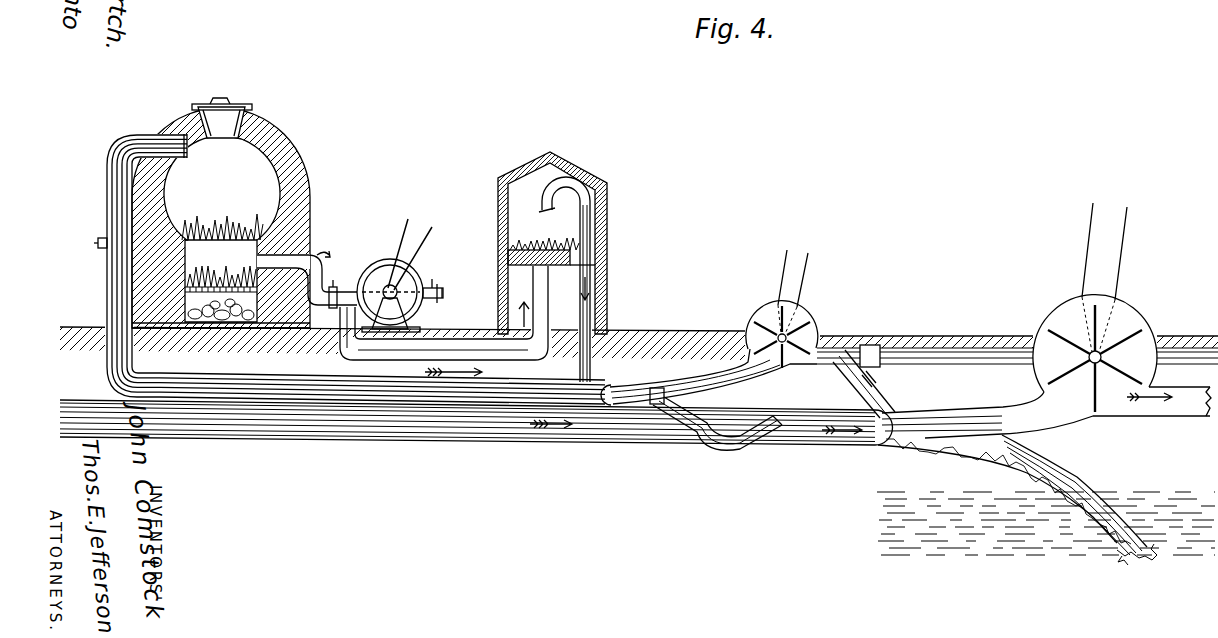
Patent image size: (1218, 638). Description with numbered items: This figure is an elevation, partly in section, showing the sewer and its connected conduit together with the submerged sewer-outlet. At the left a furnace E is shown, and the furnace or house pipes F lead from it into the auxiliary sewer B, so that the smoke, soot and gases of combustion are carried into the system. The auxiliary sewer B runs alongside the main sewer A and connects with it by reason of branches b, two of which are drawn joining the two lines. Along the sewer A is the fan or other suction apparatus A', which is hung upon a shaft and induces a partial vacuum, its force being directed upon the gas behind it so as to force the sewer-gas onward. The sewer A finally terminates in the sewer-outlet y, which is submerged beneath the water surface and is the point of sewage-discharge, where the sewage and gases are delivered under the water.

The furnace or house pipes F is at (98, 222).
The furnace E is at (221, 213).
The auxiliary sewer B is at (343, 374).
The branches b is at (707, 406).
The sewer A is at (476, 433).
The fan or other suction apparatus A' is at (1046, 320).
The sewer-outlet y is at (1096, 487).